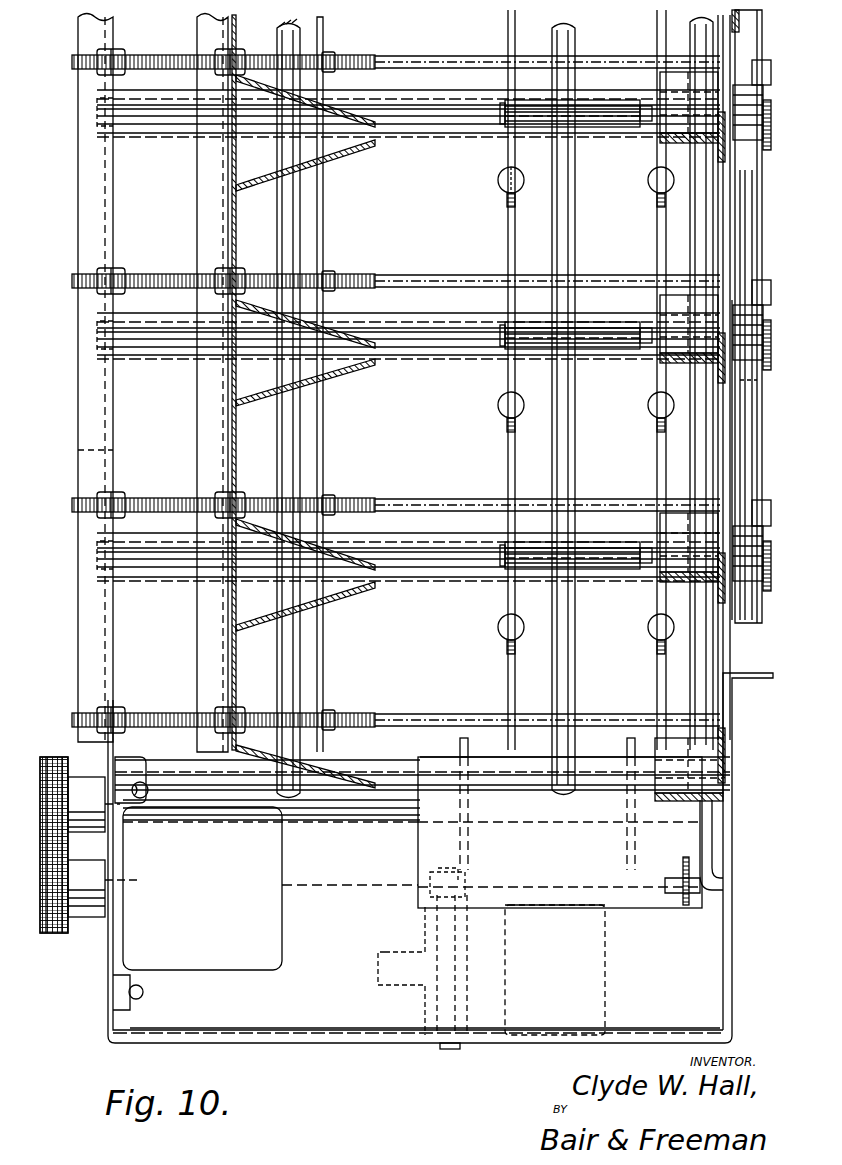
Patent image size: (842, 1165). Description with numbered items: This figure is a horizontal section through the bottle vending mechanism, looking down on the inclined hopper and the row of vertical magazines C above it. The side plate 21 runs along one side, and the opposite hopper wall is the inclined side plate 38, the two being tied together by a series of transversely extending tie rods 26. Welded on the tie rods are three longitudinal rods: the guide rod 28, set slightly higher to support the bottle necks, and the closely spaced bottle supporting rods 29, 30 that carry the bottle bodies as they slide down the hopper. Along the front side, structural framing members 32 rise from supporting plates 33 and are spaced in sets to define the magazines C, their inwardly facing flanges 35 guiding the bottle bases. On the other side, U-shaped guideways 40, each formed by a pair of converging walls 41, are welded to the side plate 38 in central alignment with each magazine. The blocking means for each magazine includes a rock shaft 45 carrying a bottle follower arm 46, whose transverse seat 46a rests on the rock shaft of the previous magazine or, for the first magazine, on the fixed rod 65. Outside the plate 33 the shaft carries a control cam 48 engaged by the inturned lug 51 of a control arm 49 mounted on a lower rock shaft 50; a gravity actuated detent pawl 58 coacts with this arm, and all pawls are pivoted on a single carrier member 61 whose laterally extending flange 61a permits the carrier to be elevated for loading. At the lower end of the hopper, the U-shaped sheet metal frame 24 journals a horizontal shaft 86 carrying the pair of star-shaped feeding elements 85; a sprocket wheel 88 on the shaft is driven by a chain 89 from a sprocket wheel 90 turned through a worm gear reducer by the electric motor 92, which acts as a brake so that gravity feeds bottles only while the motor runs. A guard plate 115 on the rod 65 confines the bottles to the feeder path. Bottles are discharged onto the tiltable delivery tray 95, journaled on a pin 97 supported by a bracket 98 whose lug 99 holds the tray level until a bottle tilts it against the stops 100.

The side plate 21 is at (84, 618).
The sheet metal frame 24 is at (727, 948).
The tie rods 26 is at (386, 58).
The guide rod 28 is at (300, 434).
The bottle supporting rod 29 is at (554, 438).
The bottle supporting rod 30 is at (690, 438).
The structural framing members 32 is at (670, 336).
The supporting plates 33 is at (735, 474).
The flanges 35 is at (718, 328).
The side plate 38 is at (205, 452).
The guideways 40 is at (236, 233).
The converging walls 41 is at (270, 388).
The rock shaft 45 is at (450, 94).
The bottle follower arm 46 is at (600, 124).
The transverse seat 46a is at (616, 104).
The control cam 48 is at (763, 118).
The control arm 49 is at (771, 137).
The rock shaft 50 is at (422, 133).
The inturned lug 51 is at (753, 288).
The gravity actuated detent pawl 58 is at (750, 252).
The carrier member 61 is at (741, 29).
The laterally extending flange 61a is at (757, 388).
The fixed rod 65 is at (364, 768).
The feeding elements 85 is at (625, 847).
The horizontal shaft 86 is at (403, 820).
The sprocket wheel 88 is at (54, 756).
The chain 89 is at (60, 852).
The sprocket wheel 90 is at (56, 943).
The electric motor 92 is at (280, 948).
The tiltable delivery tray 95 is at (332, 1006).
The pin 97 is at (440, 982).
The bracket 98 is at (445, 952).
The laterally extending lug 99 is at (386, 952).
The stops 100 is at (605, 982).
The guard plate 115 is at (567, 906).
The magazines C is at (360, 228).